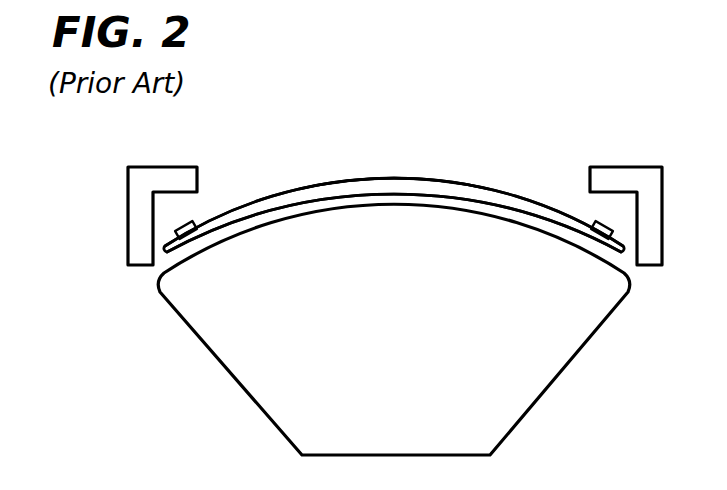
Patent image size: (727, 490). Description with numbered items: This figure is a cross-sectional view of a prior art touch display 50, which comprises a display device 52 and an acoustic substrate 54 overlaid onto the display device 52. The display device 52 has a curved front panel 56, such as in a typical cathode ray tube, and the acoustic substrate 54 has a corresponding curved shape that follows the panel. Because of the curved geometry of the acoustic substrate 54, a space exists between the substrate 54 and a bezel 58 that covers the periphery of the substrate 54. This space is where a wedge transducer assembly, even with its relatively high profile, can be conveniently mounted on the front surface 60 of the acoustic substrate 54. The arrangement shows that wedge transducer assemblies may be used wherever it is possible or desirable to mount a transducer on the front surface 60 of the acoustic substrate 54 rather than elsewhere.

The touch display 50 is at (520, 149).
The display device 52 is at (552, 348).
The acoustic substrate 54 is at (341, 188).
The curved front panel 56 is at (381, 195).
The bezel 58 is at (619, 174).
The front surface 60 is at (430, 178).